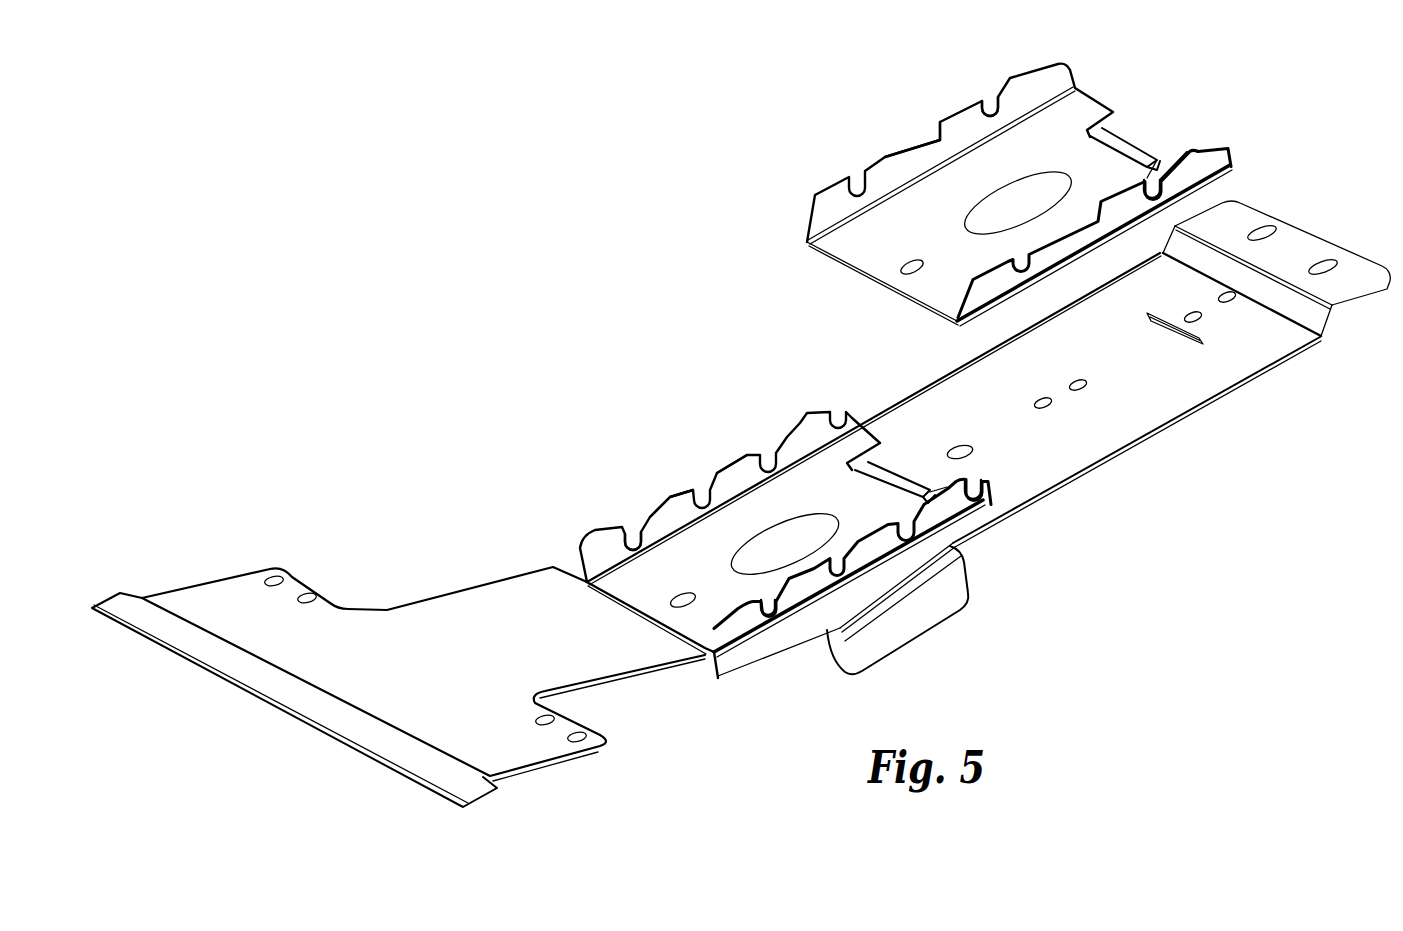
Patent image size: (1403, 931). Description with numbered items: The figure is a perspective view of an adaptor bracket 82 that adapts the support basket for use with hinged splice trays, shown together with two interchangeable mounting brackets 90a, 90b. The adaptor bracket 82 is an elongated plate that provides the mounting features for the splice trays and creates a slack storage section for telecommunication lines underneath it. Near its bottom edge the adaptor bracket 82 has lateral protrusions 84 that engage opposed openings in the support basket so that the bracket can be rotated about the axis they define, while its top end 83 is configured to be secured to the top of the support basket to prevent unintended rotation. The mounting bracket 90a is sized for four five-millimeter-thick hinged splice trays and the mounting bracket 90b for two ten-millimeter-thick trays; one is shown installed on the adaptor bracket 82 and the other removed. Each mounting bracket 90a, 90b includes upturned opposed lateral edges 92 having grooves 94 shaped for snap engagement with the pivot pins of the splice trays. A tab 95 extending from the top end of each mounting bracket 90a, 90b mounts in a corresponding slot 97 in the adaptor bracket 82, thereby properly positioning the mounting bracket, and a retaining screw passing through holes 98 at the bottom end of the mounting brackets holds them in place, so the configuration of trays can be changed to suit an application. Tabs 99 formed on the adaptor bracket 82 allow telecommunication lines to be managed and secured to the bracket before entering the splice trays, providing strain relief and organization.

The adaptor bracket 82 is at (600, 657).
The top end 83 is at (1300, 246).
The lateral protrusions 84 is at (114, 596).
The mounting bracket 90a is at (600, 550).
The mounting bracket 90b is at (827, 202).
The upturned opposed lateral edges 92 is at (877, 157).
The grooves 94 is at (990, 98).
The tab 95 is at (1121, 137).
The slot 97 is at (1203, 331).
The holes 98 is at (902, 269).
The tabs 99 is at (948, 606).